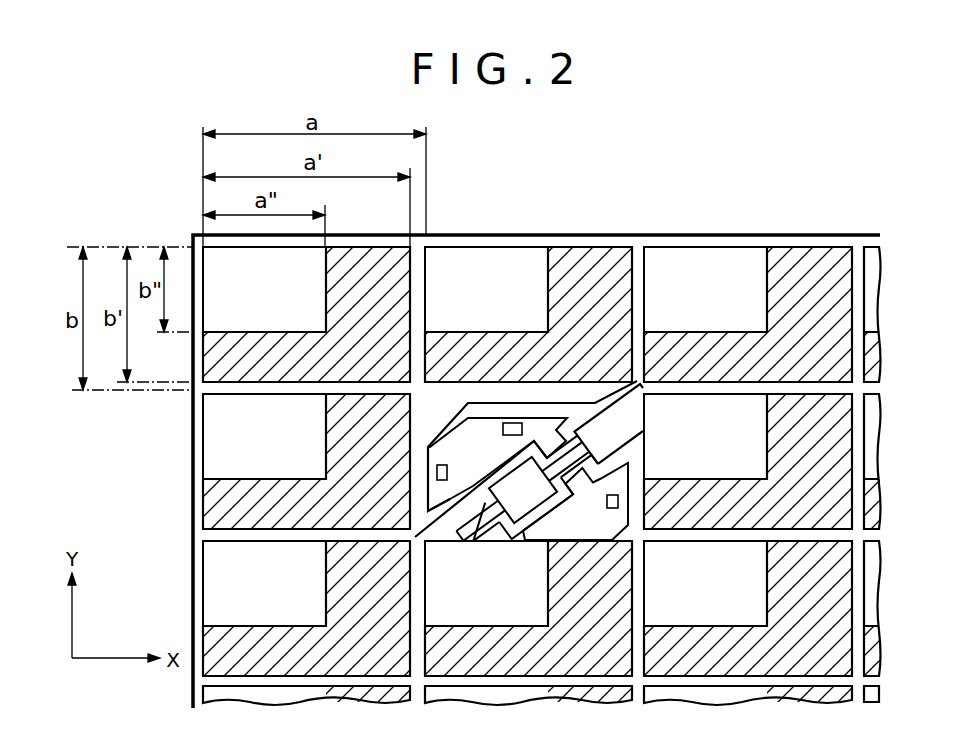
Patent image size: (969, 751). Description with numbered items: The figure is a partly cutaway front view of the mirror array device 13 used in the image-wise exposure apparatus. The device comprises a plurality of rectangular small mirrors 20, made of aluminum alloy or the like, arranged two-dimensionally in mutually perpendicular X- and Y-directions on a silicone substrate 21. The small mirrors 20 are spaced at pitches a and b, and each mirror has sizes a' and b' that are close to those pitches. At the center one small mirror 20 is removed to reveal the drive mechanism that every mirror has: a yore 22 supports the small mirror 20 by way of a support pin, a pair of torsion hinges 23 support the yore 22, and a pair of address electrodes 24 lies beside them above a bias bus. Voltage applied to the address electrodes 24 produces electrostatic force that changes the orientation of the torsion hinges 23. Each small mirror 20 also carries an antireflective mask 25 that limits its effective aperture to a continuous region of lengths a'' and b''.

The mirror array device 13 is at (560, 173).
The small mirror 20 is at (361, 248).
The silicone substrate 21 is at (670, 236).
The yore 22 is at (522, 503).
The torsion hinge 23 is at (580, 457).
The address electrode 24 is at (465, 443).
The antireflective mask 25 is at (342, 280).